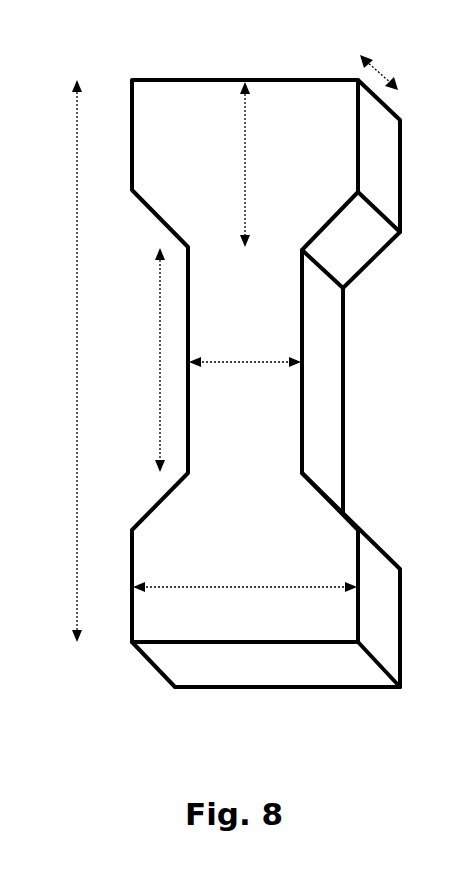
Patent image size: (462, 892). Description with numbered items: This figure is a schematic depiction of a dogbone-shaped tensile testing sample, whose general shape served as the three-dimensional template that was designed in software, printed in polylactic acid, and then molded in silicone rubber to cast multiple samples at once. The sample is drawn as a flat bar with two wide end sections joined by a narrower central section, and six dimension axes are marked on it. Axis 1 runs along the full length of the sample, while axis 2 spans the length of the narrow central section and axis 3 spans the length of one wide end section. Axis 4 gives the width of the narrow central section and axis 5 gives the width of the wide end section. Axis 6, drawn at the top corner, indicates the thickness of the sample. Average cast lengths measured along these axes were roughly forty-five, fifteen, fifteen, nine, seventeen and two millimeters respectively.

The axis 1 is at (51, 361).
The axis 2 is at (134, 360).
The axis 3 is at (215, 164).
The axis 4 is at (245, 335).
The axis 5 is at (245, 560).
The axis 6 is at (401, 63).